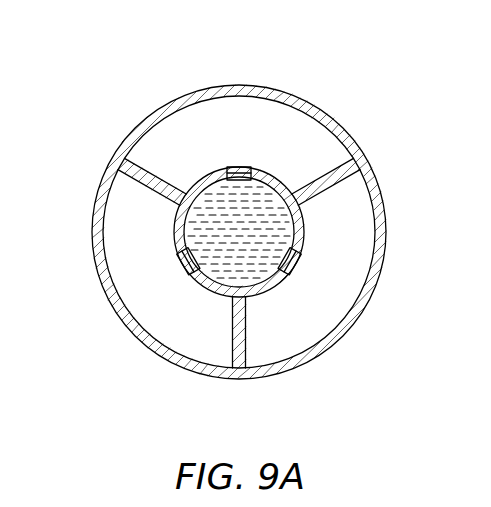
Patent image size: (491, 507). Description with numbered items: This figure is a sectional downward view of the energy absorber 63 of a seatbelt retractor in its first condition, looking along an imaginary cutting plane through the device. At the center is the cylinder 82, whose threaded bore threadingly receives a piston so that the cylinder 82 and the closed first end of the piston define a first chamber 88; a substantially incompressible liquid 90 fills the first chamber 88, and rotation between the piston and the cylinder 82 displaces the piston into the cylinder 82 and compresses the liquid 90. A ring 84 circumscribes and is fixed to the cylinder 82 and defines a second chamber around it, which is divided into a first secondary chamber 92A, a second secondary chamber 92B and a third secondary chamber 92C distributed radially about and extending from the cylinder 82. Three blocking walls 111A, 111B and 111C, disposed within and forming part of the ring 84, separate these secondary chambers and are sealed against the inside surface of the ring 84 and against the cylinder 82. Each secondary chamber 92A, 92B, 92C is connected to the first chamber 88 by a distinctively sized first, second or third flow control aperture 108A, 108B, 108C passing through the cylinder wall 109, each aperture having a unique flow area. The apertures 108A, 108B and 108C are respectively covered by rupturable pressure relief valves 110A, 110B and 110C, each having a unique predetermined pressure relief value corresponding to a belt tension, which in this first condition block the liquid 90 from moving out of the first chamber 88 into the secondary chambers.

The energy absorber 63 is at (269, 212).
The cylinder 82 is at (335, 150).
The ring 84 is at (385, 222).
The first chamber 88 is at (244, 224).
The liquid 90 is at (213, 233).
The first secondary chamber 92A is at (280, 120).
The second secondary chamber 92B is at (352, 250).
The third secondary chamber 92C is at (185, 325).
The first flow control aperture 108A is at (191, 107).
The second flow control aperture 108B is at (364, 307).
The third flow control aperture 108C is at (111, 301).
The cylinder wall 109 is at (244, 190).
The first rupturable pressure relief valve 110A is at (228, 168).
The second rupturable pressure relief valve 110B is at (292, 263).
The third rupturable pressure relief valve 110C is at (181, 264).
The first blocking wall 111A is at (348, 166).
The second blocking wall 111B is at (246, 340).
The third blocking wall 111C is at (136, 178).